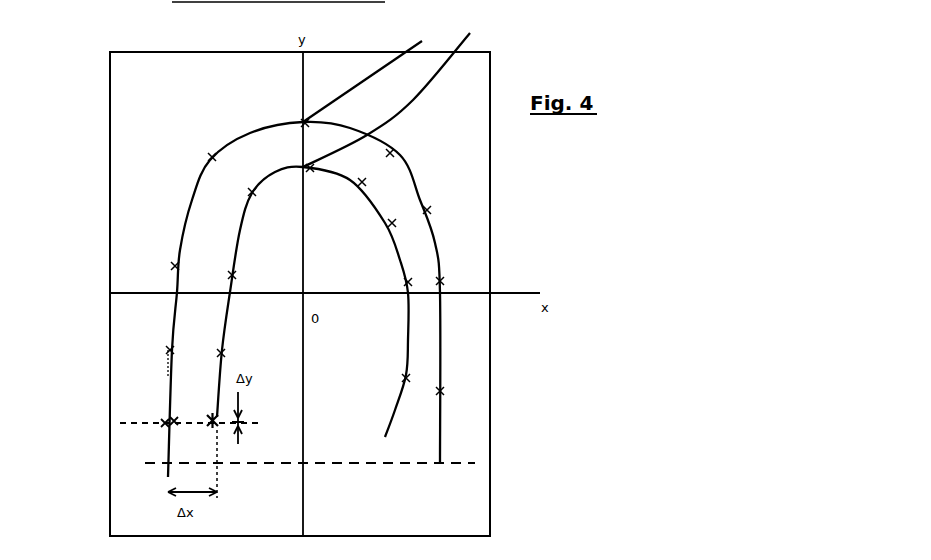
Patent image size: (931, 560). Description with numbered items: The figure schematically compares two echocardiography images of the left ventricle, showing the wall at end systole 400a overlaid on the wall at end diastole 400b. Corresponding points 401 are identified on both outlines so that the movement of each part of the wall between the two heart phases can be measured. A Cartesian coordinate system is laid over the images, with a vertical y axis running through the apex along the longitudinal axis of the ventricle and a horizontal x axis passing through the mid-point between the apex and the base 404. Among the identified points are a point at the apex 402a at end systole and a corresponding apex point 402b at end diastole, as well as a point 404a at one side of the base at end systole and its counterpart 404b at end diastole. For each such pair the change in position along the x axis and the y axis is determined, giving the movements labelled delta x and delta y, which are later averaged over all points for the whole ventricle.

The corresponding points 401 is at (210, 157).
The apex point at end systole 402a is at (399, 86).
The apex point at end diastole 402b is at (368, 72).
The left ventricle wall at end systole 400a is at (235, 258).
The left ventricle wall at end diastole 400b is at (168, 373).
The base point at end systole 404a is at (212, 420).
The base point at end diastole 404b is at (168, 423).
The base 404 is at (365, 464).